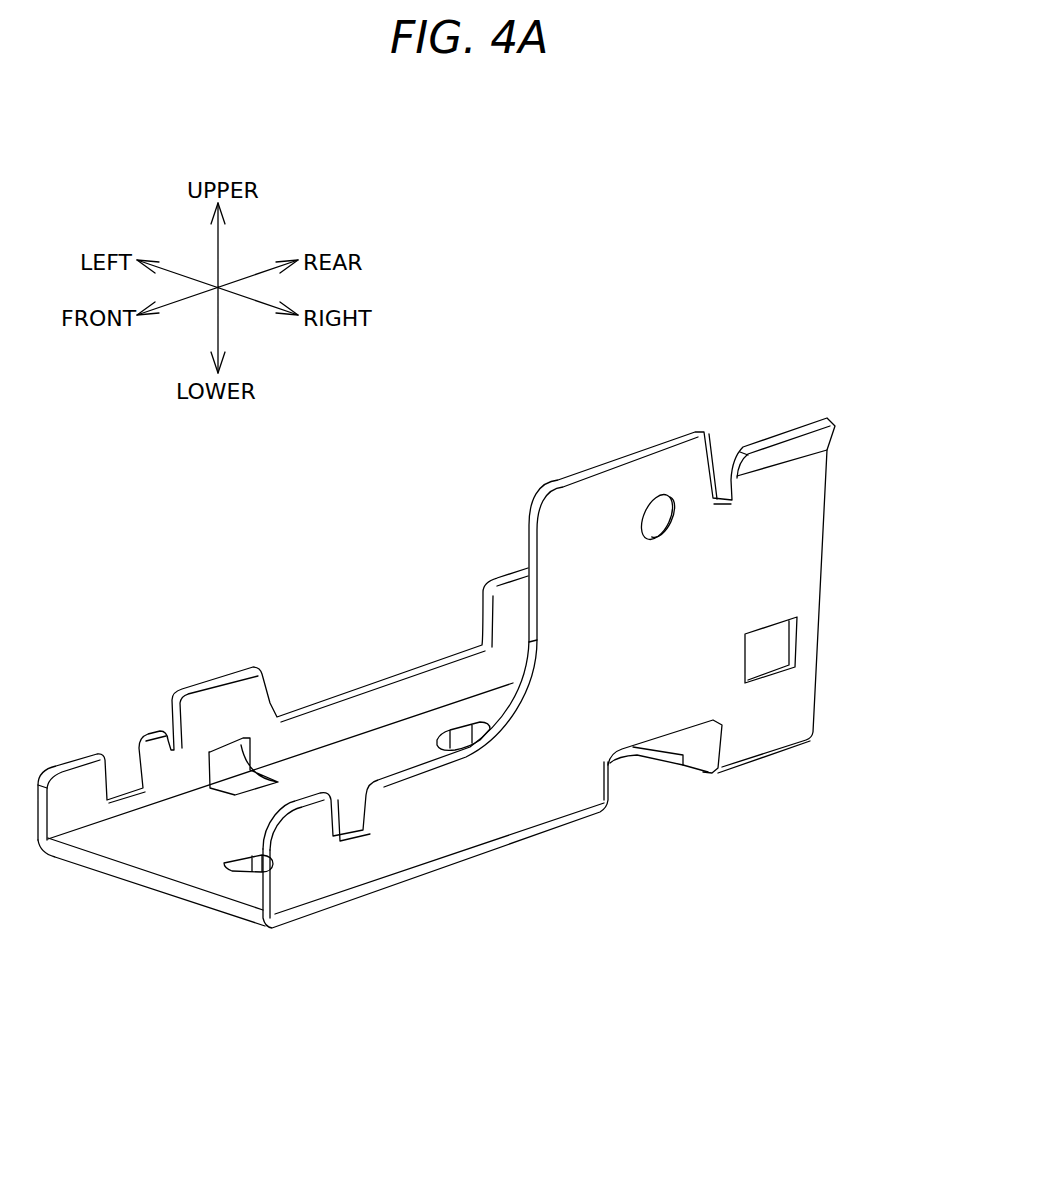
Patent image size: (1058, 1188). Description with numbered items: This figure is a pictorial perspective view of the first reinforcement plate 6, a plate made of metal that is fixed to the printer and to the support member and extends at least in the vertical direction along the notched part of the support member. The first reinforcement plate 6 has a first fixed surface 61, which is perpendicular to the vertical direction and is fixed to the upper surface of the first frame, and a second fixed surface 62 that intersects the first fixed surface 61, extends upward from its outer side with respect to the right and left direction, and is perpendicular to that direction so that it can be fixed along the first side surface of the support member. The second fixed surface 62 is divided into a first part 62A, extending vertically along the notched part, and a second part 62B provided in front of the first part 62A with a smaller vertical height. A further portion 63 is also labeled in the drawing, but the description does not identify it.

The first reinforcement plate 6 is at (807, 358).
The first fixed surface 61 is at (351, 921).
The second fixed surface 62 is at (517, 541).
The first part 62A is at (653, 628).
The second part 62B is at (457, 803).
The side wall portion 63 is at (340, 717).